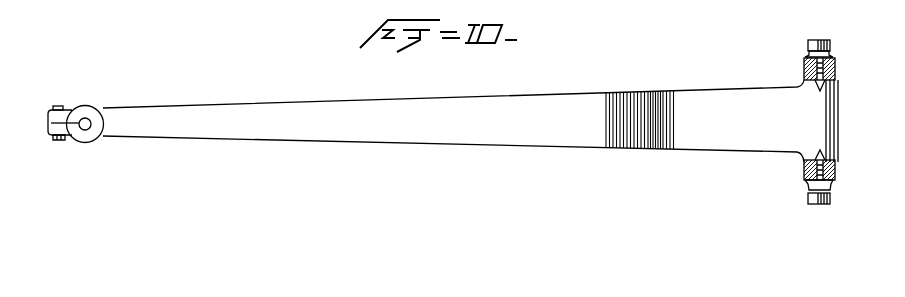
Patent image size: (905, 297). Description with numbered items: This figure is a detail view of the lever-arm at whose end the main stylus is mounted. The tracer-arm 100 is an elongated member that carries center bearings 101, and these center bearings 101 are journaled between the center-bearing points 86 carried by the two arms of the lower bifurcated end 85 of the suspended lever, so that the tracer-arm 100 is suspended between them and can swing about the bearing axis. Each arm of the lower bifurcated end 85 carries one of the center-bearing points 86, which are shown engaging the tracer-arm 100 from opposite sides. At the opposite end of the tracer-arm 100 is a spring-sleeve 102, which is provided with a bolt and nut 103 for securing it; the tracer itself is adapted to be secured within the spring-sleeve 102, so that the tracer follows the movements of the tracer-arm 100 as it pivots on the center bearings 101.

The tracer-arm 100 is at (475, 142).
The center bearings 101 is at (817, 89).
The spring-sleeve 102 is at (85, 142).
The bolt and nut 103 is at (58, 107).
The lower bifurcated end 85 is at (804, 68).
The center-bearing points 86 is at (816, 39).